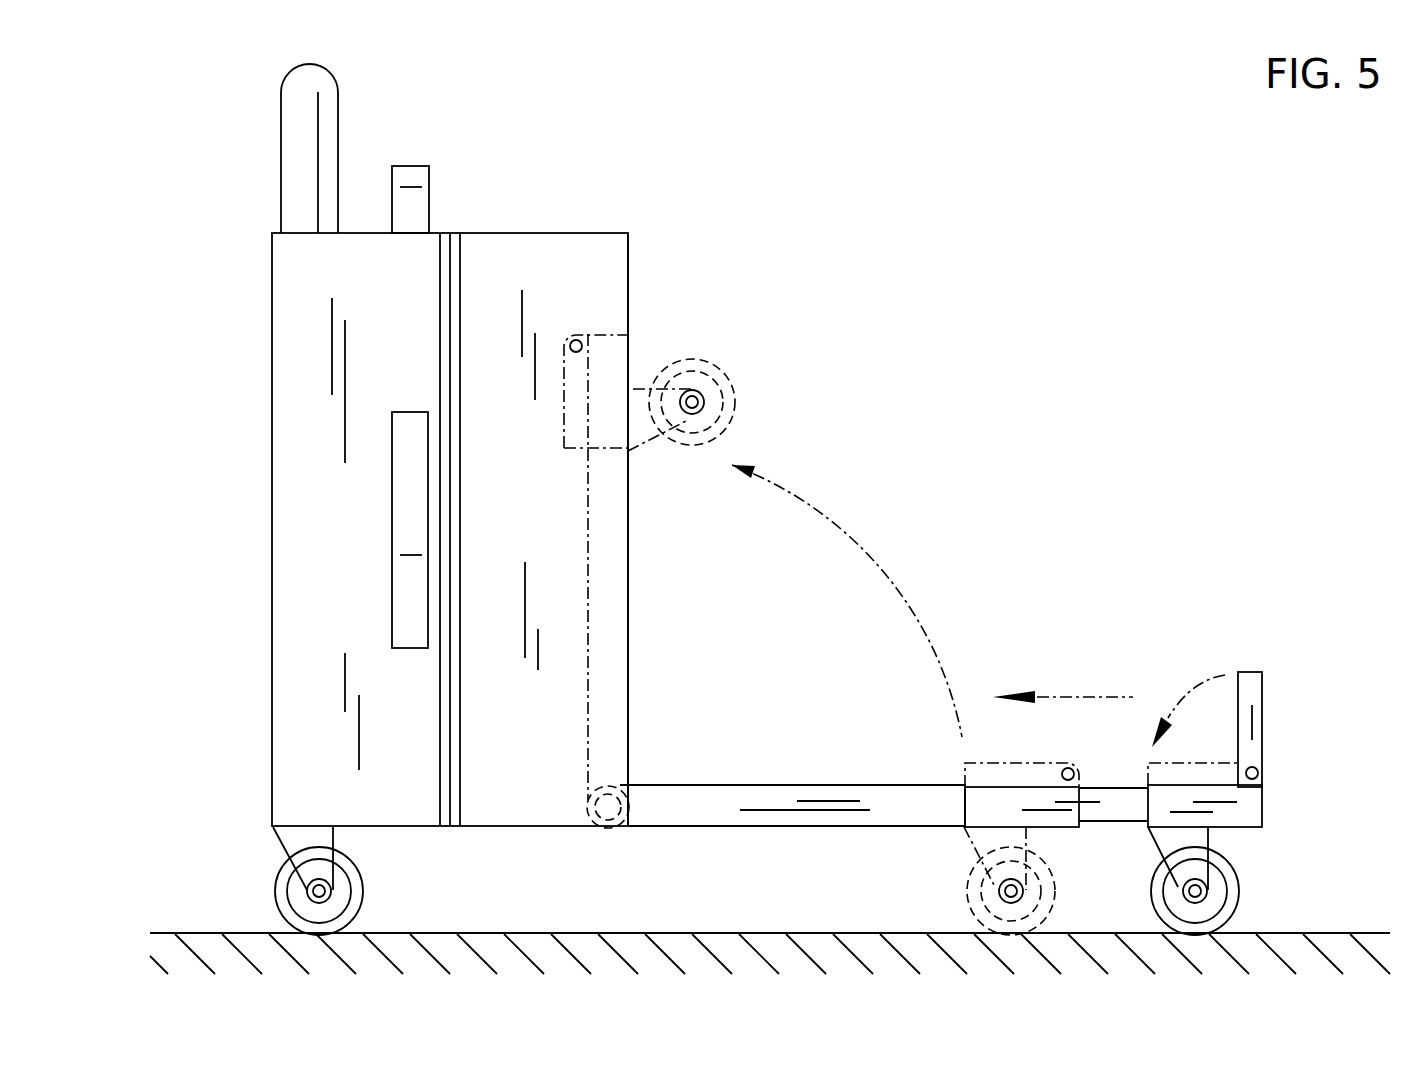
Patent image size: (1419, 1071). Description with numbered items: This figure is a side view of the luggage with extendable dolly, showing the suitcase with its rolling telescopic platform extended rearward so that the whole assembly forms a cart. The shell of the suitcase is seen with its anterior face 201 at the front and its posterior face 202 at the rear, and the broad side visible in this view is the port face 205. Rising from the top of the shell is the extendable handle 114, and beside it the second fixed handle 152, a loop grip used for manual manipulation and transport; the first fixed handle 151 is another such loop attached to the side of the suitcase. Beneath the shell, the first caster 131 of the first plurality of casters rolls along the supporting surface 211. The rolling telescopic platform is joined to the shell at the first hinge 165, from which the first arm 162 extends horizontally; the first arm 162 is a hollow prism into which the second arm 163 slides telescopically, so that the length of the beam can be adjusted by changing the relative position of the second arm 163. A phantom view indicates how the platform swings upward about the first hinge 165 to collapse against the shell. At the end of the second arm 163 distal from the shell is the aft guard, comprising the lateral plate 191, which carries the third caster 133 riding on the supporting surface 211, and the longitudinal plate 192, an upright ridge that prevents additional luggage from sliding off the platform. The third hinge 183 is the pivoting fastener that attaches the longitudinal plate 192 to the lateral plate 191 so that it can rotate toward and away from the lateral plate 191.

The extendable handle 114 is at (338, 128).
The second fixed handle 152 is at (430, 197).
The port face 205 is at (527, 280).
The first fixed handle 151 is at (392, 478).
The anterior face 201 is at (272, 662).
The posterior face 202 is at (628, 620).
The first arm 162 is at (782, 802).
The first hinge 165 is at (608, 807).
The second arm 163 is at (1110, 800).
The third hinge 183 is at (1255, 770).
The longitudinal plate 192 is at (1258, 715).
The lateral plate 191 is at (1230, 810).
The third caster 133 is at (1222, 905).
The first caster 131 is at (357, 900).
The supporting surface 211 is at (225, 933).